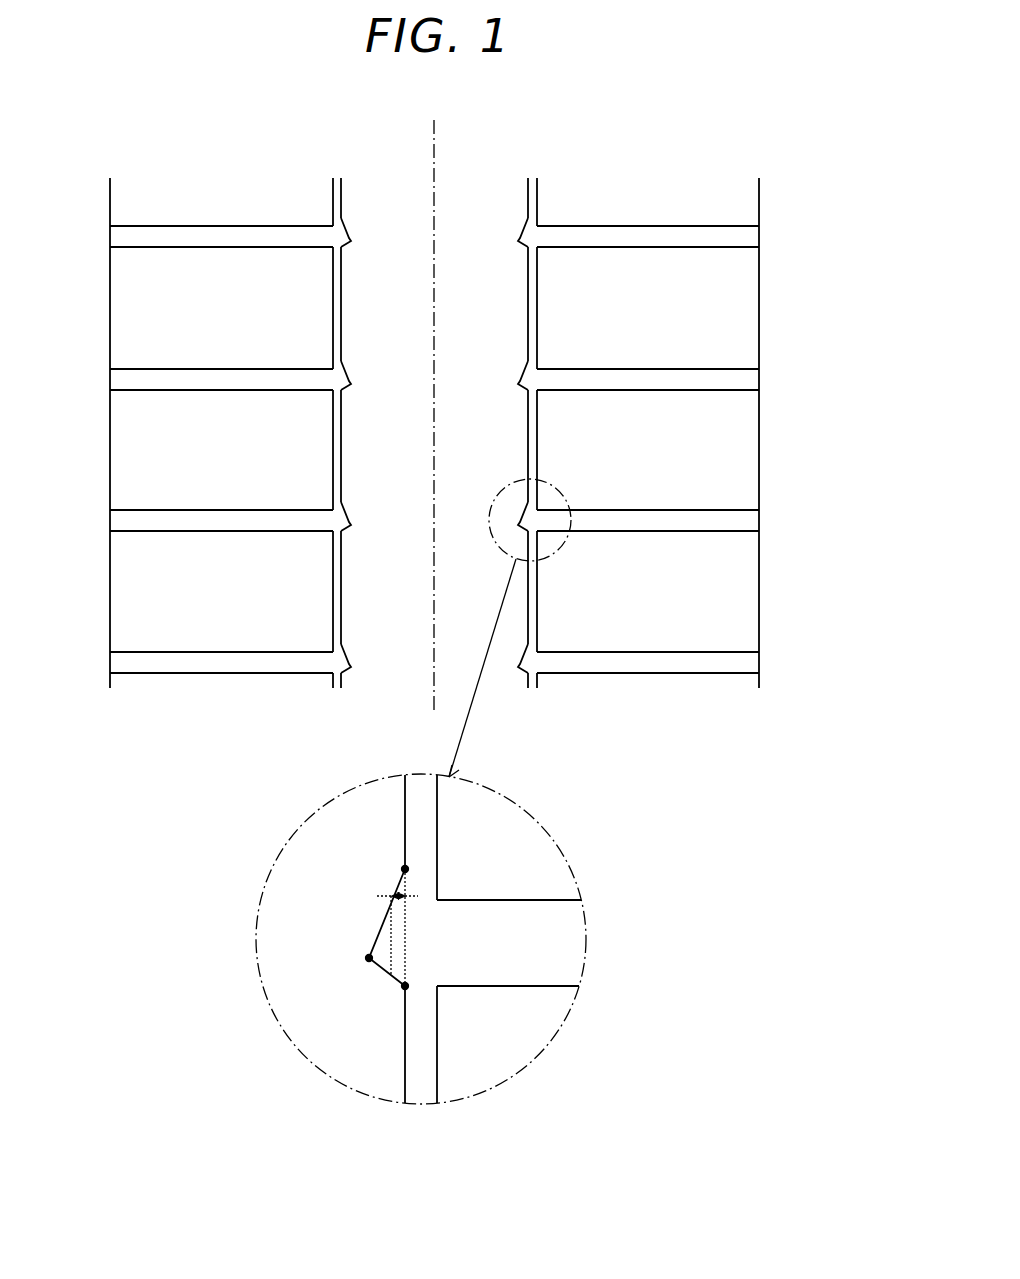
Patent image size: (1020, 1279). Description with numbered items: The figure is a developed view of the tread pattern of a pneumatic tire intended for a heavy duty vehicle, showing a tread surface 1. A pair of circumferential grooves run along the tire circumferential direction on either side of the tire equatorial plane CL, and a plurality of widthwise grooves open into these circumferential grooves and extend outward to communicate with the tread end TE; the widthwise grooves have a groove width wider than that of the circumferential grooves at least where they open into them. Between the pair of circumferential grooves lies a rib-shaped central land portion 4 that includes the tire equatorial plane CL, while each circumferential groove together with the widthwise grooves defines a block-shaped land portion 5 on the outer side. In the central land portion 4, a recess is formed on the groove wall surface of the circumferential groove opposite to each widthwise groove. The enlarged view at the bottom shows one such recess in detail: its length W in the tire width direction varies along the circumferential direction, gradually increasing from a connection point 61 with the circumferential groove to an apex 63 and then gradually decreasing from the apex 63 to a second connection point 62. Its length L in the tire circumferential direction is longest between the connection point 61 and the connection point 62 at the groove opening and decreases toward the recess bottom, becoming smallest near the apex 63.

The tread surface 1 is at (434, 395).
The rib-shaped central land portion 4 is at (462, 186).
The block-shaped land portion 5 is at (223, 186).
The connection point 61 is at (403, 867).
The connection point 62 is at (404, 989).
The apex 63 is at (367, 958).
The tread end TE is at (110, 307).
The tire equatorial plane CL is at (434, 398).
The length of the recess in the tire width direction W is at (392, 927).
The length of the recess in the tire circumferential direction L is at (393, 941).